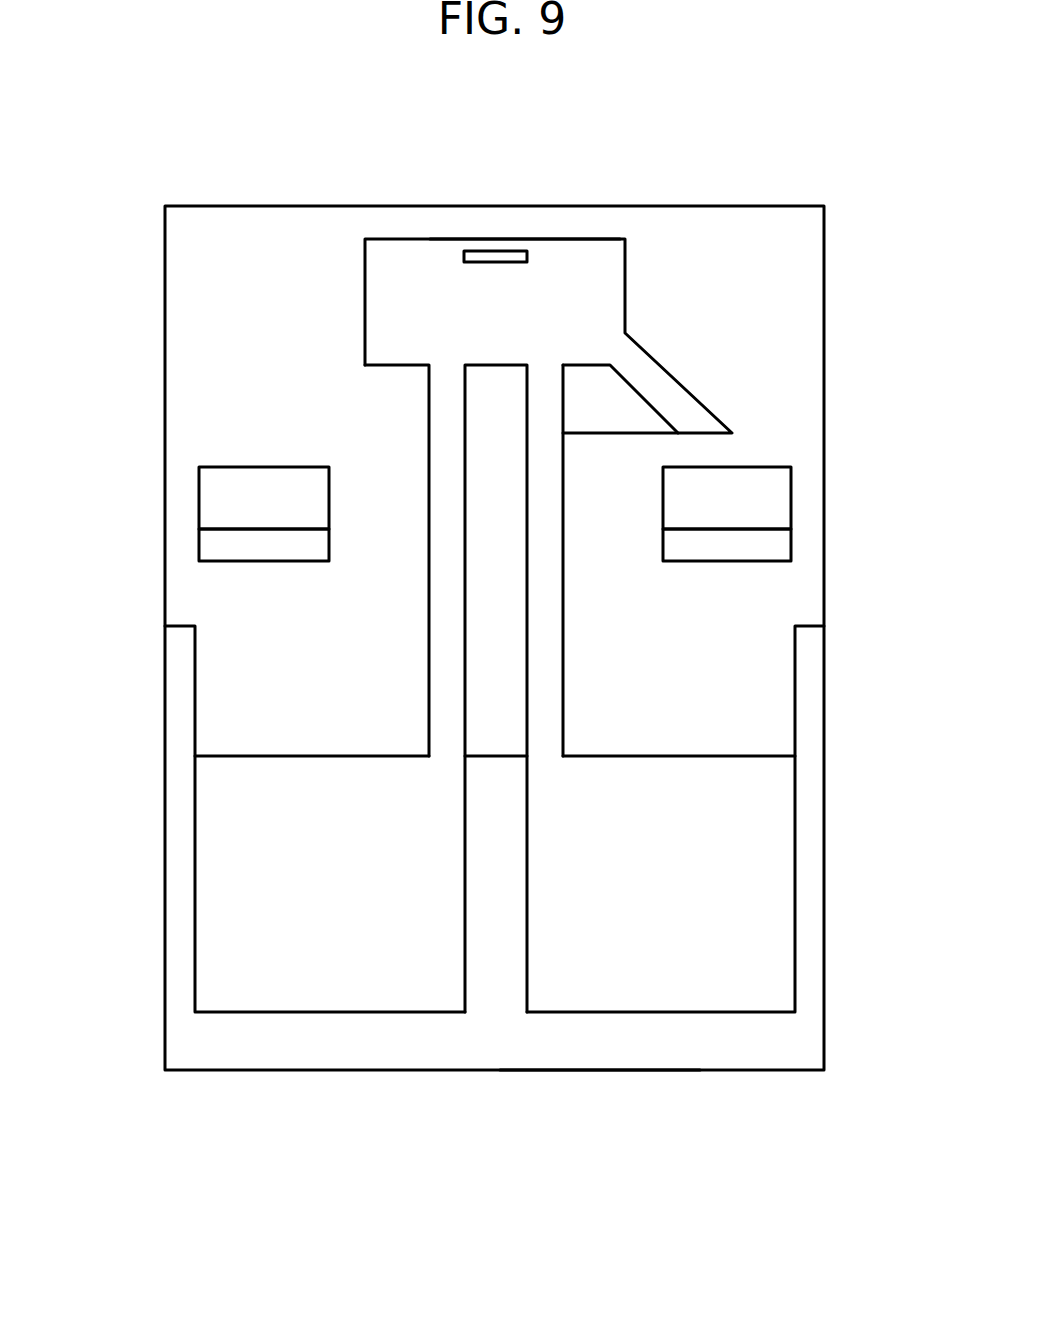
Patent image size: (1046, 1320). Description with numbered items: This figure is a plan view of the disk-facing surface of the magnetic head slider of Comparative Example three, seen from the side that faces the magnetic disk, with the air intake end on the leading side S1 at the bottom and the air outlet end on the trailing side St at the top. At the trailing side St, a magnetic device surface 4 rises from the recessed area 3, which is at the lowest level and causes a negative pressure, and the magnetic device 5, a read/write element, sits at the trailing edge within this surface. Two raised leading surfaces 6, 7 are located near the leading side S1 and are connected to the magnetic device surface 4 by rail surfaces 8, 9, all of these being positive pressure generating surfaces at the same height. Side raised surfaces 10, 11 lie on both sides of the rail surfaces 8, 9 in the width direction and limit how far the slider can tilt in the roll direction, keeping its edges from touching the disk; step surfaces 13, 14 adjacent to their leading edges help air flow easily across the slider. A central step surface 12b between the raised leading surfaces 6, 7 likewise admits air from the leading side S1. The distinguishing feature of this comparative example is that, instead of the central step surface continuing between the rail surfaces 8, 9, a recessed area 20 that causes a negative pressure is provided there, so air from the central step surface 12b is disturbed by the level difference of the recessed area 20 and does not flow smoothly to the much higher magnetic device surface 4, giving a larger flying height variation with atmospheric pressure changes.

The recessed area 3 is at (791, 327).
The magnetic device surface 4 is at (580, 284).
The magnetic device 5 is at (509, 250).
The raised leading surface 6 is at (280, 983).
The raised leading surface 7 is at (707, 985).
The rail surface 8 is at (448, 609).
The rail surface 9 is at (542, 634).
The side raised surface 10 is at (223, 495).
The side raised surface 11 is at (771, 499).
The central step surface 12b is at (490, 946).
The step surface 13 is at (222, 549).
The step surface 14 is at (777, 549).
The recessed area 20 is at (498, 707).
The trailing side St is at (521, 206).
The leading side S1 is at (593, 1071).